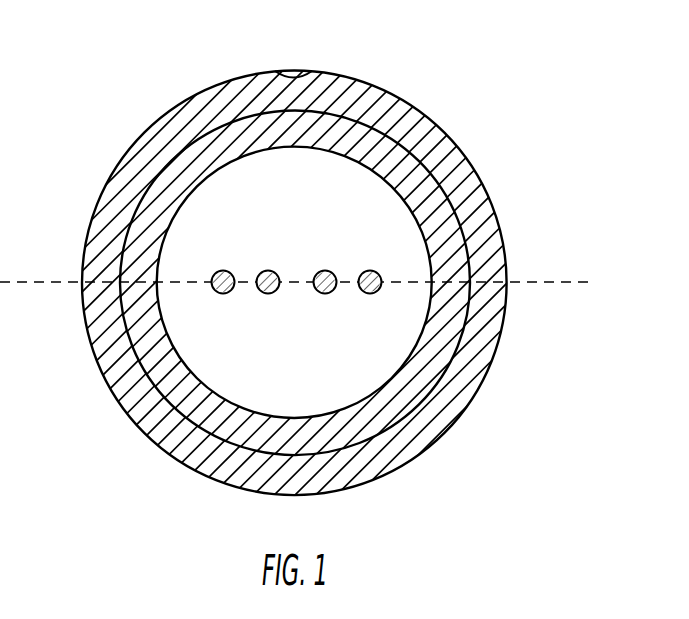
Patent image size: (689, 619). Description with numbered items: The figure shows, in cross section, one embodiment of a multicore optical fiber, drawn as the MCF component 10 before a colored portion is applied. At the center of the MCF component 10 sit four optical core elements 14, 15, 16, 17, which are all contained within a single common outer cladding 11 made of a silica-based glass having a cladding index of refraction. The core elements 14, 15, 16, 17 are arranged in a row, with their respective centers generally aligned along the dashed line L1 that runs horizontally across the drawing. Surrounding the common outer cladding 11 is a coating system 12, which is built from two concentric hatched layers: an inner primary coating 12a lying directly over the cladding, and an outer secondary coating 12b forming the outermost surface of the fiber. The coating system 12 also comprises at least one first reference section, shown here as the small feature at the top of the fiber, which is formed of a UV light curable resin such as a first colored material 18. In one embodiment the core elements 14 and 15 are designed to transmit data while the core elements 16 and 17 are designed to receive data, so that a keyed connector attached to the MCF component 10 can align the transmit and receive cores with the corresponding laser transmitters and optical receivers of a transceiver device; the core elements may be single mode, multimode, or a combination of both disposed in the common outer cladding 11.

The MCF component 10 is at (183, 85).
The common outer cladding 11 is at (334, 175).
The coating system 12 is at (344, 309).
The primary coating 12a is at (433, 238).
The secondary coating 12b is at (457, 185).
The core element 14 is at (213, 299).
The core element 15 is at (257, 300).
The core element 16 is at (315, 299).
The core element 17 is at (363, 299).
The first colored material 18 is at (305, 65).
The line L1 is at (54, 282).